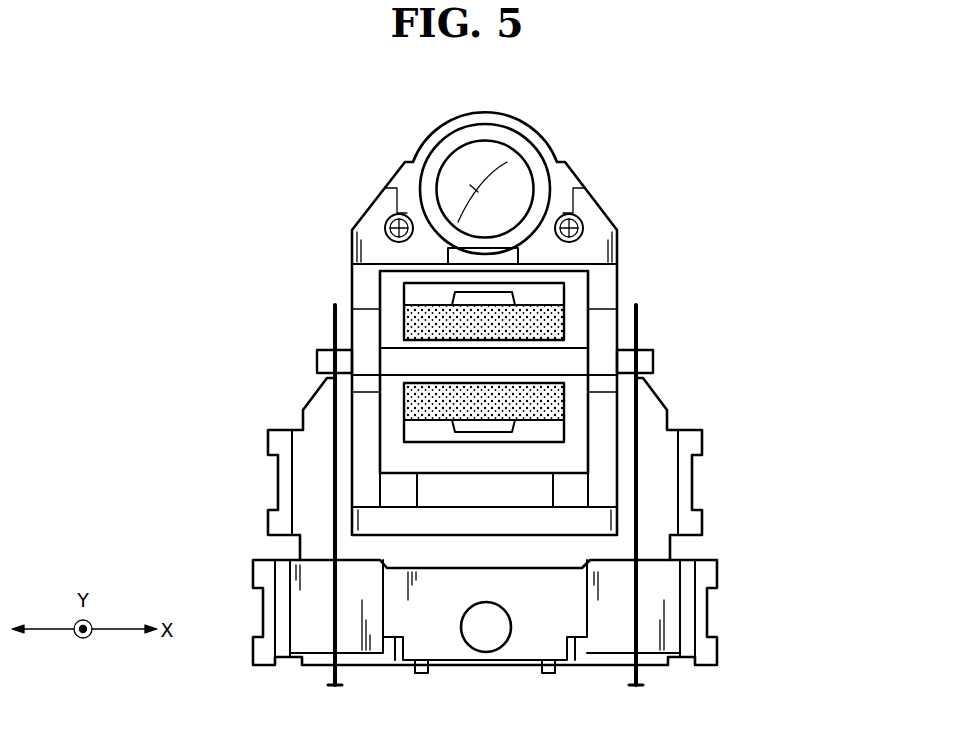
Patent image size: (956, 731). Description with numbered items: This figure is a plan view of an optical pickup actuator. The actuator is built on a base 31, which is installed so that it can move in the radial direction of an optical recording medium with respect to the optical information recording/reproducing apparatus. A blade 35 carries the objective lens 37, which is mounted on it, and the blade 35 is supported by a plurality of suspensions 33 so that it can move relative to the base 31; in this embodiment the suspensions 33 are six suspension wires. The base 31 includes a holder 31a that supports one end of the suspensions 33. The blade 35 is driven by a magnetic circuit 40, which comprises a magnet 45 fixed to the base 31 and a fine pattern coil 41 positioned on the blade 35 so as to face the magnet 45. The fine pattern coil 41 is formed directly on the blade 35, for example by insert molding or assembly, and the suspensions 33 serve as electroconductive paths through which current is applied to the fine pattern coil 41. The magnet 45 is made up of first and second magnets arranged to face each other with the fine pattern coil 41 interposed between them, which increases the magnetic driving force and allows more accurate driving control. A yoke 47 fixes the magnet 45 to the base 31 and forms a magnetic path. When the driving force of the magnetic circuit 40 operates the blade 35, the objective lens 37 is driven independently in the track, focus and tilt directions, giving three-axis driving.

The base 31 is at (665, 545).
The holder 31a is at (663, 618).
The suspensions 33 is at (638, 483).
The blade 35 is at (618, 242).
The objective lens 37 is at (513, 183).
The magnetic circuit 40 is at (695, 294).
The fine pattern coil 41 is at (637, 362).
The magnet 45 is at (558, 330).
The yoke 47 is at (557, 293).